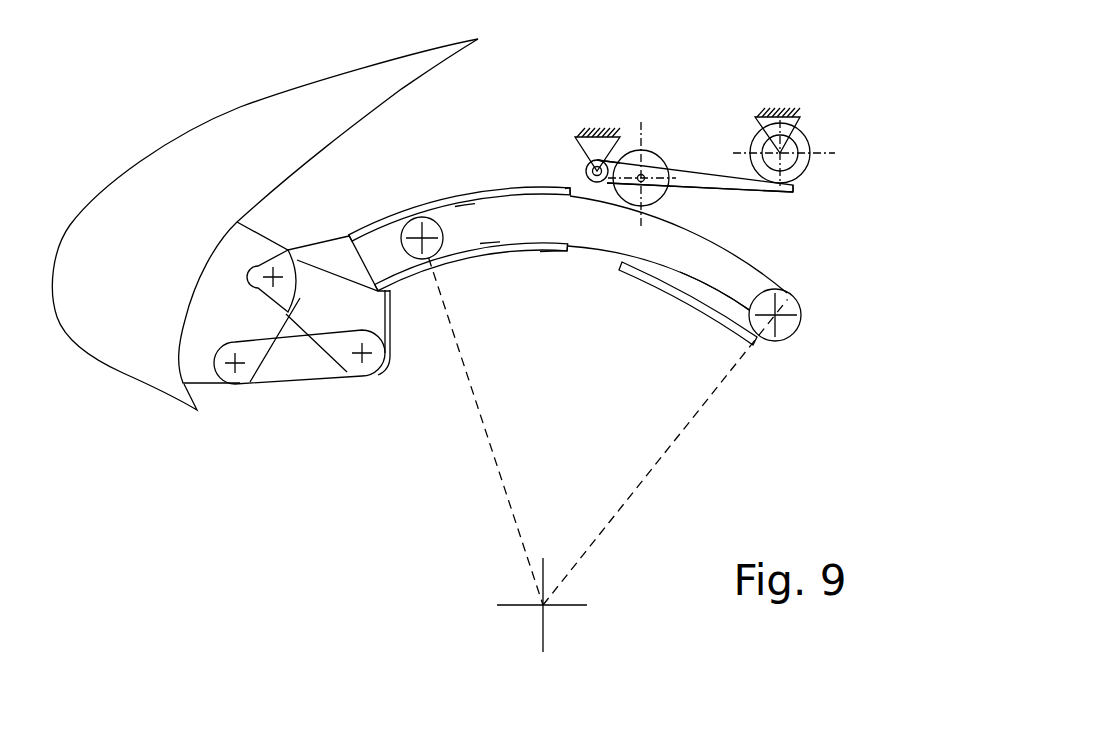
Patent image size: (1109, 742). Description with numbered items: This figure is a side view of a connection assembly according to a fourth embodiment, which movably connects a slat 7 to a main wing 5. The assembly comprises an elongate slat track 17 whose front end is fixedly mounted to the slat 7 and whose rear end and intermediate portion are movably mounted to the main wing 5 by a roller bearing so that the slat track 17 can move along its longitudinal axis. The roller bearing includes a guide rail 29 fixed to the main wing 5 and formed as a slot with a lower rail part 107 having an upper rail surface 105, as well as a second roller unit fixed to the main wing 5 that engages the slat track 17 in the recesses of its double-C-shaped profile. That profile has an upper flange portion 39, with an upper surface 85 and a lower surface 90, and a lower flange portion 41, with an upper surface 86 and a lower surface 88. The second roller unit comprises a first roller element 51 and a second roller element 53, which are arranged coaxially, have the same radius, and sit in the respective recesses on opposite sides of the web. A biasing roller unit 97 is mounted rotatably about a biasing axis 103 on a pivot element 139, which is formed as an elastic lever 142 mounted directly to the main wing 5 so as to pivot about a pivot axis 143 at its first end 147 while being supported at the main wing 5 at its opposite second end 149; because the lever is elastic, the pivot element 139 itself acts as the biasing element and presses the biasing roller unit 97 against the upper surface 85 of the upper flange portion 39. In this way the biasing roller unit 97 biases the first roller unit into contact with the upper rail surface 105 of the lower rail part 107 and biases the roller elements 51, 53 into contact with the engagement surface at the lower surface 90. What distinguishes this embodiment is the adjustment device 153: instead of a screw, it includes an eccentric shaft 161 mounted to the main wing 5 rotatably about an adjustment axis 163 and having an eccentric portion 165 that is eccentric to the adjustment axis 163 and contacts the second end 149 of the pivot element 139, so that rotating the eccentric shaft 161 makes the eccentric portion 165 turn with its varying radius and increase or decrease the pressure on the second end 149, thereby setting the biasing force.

The main wing 5 is at (556, 397).
The slat 7 is at (119, 262).
The slat track 17 is at (519, 230).
The guide rail 29 is at (665, 309).
The upper flange portion 39 is at (380, 219).
The lower flange portion 41 is at (404, 288).
The first roller element 51 is at (783, 342).
The second roller element 53 is at (432, 219).
The upper surface 85 is at (560, 185).
The upper surface 86 is at (490, 240).
The lower surface 88 is at (547, 250).
The lower surface 90 is at (465, 207).
The biasing roller unit 97 is at (648, 196).
The biasing axis 103 is at (637, 173).
The upper rail surface 105 is at (720, 297).
The lower rail part 107 is at (627, 271).
The pivot element 139 is at (695, 136).
The elastic lever 142 is at (722, 176).
The pivot axis 143 is at (587, 168).
The first end 147 is at (606, 186).
The second end 149 is at (777, 188).
The adjustment device 153 is at (816, 115).
The eccentric shaft 161 is at (800, 170).
The adjustment axis 163 is at (797, 156).
The eccentric portion 165 is at (800, 143).